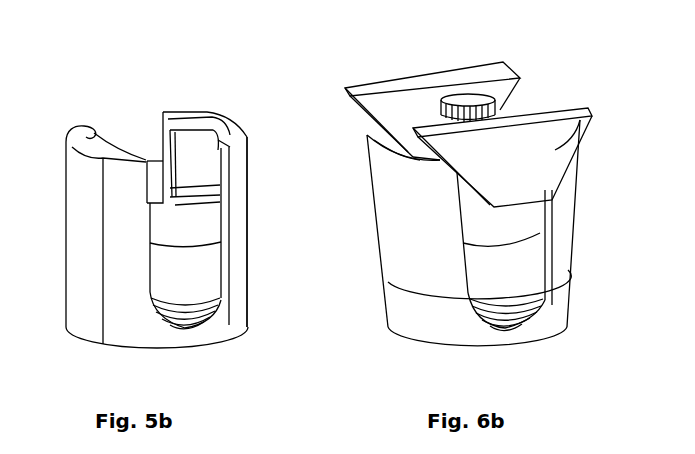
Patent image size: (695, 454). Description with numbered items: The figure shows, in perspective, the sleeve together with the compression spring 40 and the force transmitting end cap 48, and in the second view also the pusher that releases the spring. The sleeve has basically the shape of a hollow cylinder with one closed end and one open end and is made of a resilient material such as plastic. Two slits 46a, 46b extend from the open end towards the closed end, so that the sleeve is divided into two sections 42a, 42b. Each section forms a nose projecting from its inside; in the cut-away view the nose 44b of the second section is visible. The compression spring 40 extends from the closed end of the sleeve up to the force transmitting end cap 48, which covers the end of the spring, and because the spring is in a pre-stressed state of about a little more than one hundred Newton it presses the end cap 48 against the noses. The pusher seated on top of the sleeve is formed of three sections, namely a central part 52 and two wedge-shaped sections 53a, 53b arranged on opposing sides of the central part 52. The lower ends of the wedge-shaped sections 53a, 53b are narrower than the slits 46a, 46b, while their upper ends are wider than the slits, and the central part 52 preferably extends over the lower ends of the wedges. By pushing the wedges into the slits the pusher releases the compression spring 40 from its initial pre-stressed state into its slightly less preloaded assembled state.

In FIG. 5B, the compression spring 40 is at (203, 310).
In FIG. 5B, the first section of the sleeve 42a is at (80, 223).
In FIG. 5B, the second section of the sleeve 42b is at (240, 183).
In FIG. 5B, the nose 44b is at (190, 187).
In FIG. 5B, the first slit 46a is at (145, 128).
In FIG. 5B, the second slit 46b is at (200, 218).
In FIG. 5B, the force transmitting end cap 48 is at (195, 270).
In FIG. 6B, the central part of the pusher 52 is at (473, 96).
In FIG. 6B, the first wedge-shaped section of the pusher 53a is at (402, 108).
In FIG. 6B, the second wedge-shaped section of the pusher 53b is at (530, 153).